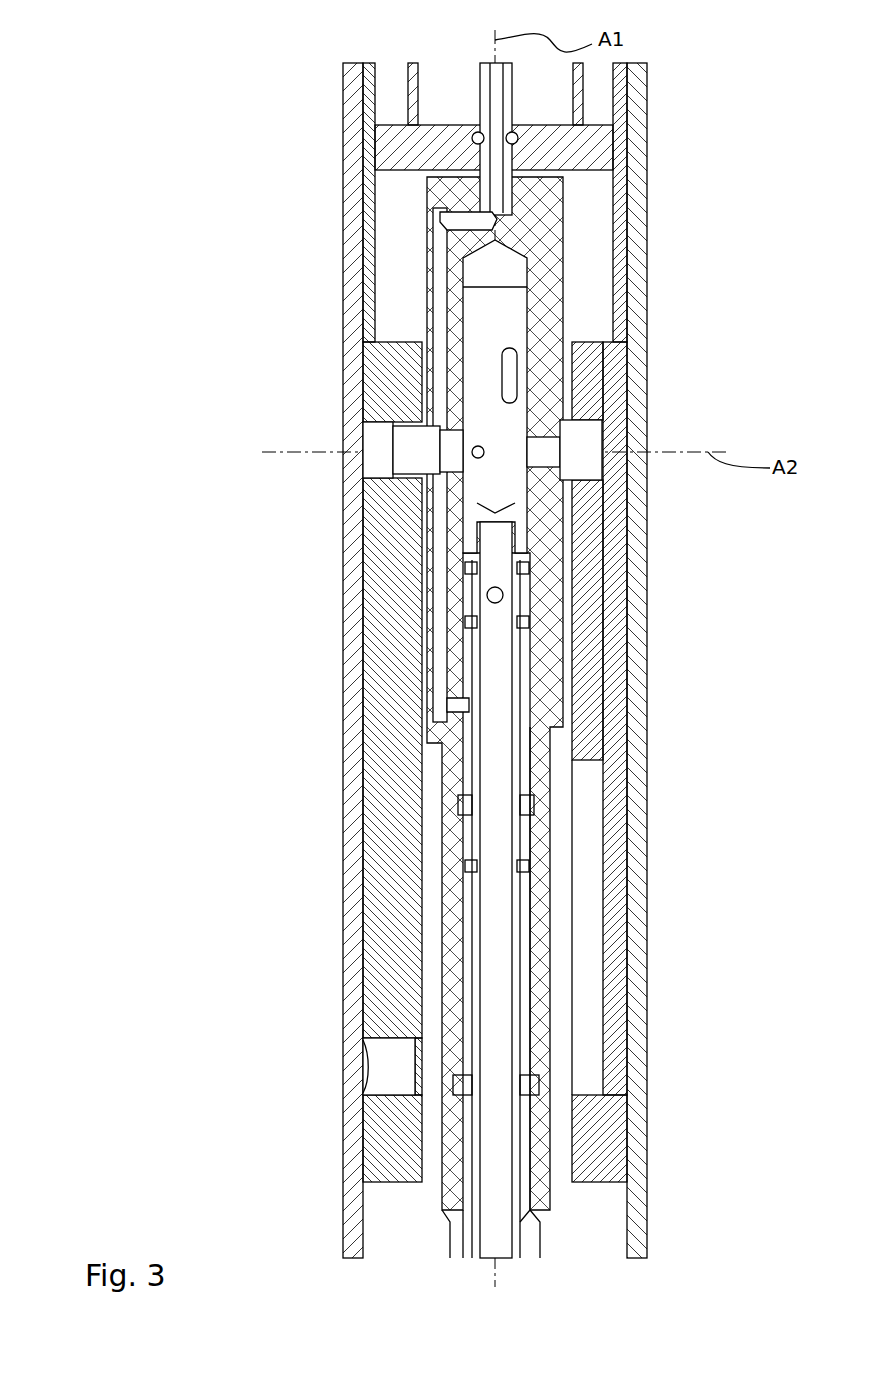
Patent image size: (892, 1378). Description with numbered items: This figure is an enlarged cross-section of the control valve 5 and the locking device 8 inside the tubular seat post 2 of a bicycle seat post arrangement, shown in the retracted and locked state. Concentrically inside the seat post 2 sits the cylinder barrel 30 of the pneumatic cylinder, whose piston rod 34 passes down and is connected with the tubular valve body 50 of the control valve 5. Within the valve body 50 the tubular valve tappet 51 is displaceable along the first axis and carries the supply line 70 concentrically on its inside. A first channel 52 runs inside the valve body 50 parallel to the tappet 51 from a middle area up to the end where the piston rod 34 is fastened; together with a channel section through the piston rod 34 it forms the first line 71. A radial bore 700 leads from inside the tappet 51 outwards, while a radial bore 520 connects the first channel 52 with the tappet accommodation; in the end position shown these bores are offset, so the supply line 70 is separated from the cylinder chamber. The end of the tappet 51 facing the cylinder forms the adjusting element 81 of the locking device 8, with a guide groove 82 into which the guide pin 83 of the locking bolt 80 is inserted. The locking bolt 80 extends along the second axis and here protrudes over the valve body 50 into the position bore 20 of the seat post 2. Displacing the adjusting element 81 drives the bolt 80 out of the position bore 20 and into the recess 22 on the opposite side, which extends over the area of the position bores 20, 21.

The seat post 2 is at (168, 156).
The cylinder barrel 30 is at (415, 97).
The first line 71 is at (497, 100).
The piston rod 34 is at (508, 123).
The adjusting element 81 is at (508, 333).
The locking bolt 80 is at (393, 430).
The guide groove 82 is at (508, 402).
The locking device 8 is at (164, 483).
The position bore 20 is at (372, 457).
The guide pin 83 is at (487, 457).
The first channel 52 is at (437, 640).
The bore 700 is at (503, 598).
The control valve 5 is at (164, 670).
The bore 520 is at (450, 703).
The valve body 50 is at (555, 703).
The recess 22 is at (587, 813).
The valve tappet 51 is at (520, 892).
The position bore 21 is at (380, 1067).
The supply line 70 is at (503, 1093).